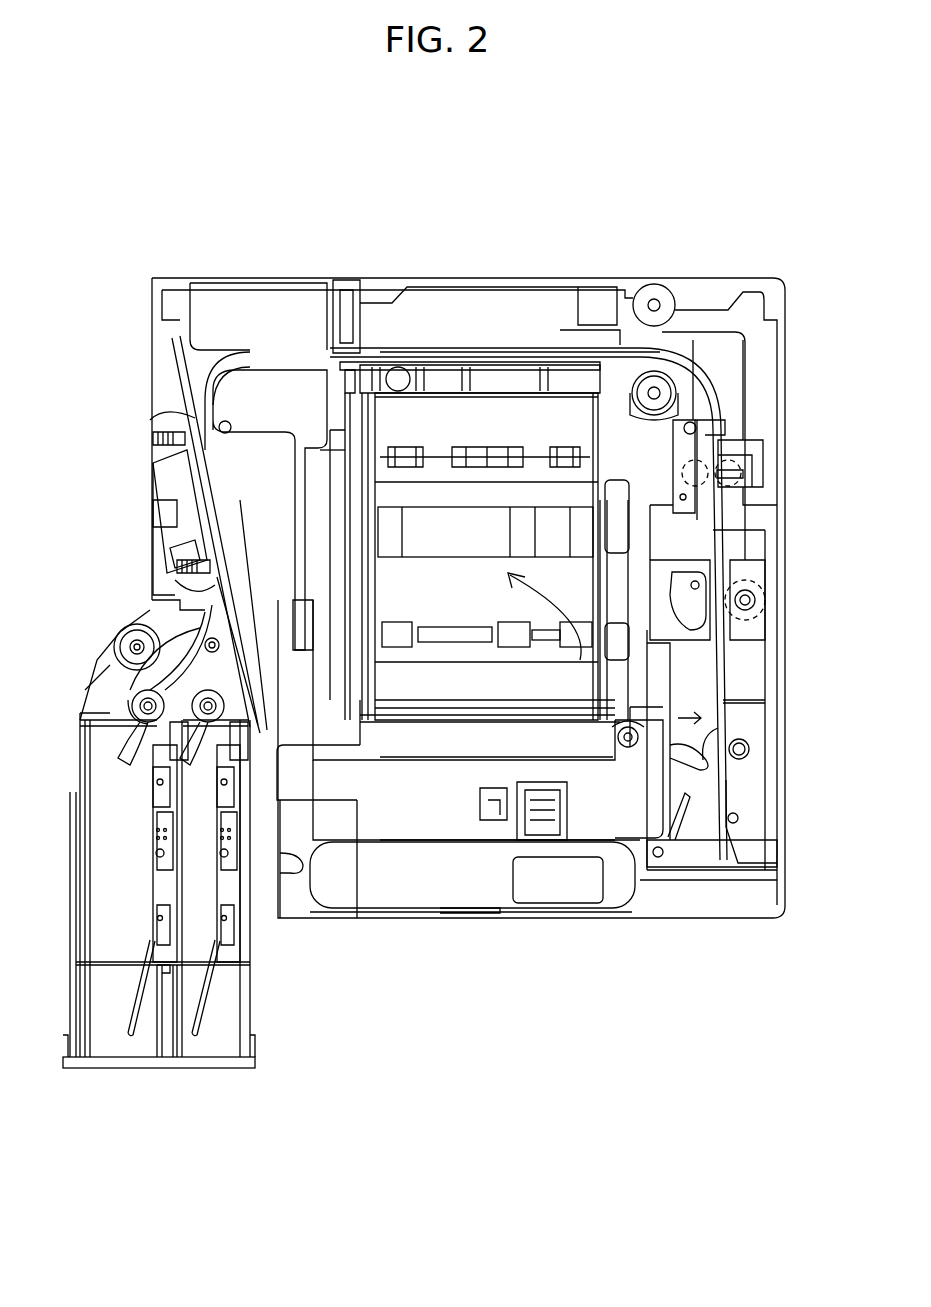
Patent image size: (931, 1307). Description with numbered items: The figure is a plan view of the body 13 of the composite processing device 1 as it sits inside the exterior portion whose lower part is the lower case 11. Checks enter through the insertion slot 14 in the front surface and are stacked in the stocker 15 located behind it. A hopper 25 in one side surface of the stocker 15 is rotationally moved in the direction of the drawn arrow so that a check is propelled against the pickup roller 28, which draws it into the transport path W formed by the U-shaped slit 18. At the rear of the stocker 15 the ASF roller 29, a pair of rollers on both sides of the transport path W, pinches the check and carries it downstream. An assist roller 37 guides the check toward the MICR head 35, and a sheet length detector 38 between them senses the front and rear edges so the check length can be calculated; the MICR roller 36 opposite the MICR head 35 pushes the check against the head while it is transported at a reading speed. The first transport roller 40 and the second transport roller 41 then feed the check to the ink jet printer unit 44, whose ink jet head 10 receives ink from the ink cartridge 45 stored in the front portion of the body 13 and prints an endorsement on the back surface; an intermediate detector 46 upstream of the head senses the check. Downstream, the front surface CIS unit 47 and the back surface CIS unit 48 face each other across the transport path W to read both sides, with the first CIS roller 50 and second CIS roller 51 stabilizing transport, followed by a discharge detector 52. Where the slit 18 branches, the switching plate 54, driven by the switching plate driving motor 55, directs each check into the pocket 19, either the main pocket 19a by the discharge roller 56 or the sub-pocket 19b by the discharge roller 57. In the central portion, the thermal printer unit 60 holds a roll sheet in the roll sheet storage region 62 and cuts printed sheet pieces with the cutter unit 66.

The composite processing device 1 is at (462, 185).
The ink jet head 10 is at (300, 362).
The lower case 11 is at (735, 895).
The body 13 is at (680, 278).
The insertion slot 14 is at (697, 840).
The stocker 15 is at (712, 784).
The slit 18 is at (530, 350).
The pocket 19 is at (205, 1147).
The main pocket 19a is at (112, 935).
The sub-pocket 19b is at (190, 935).
The hopper 25 is at (660, 692).
The pickup roller 28 is at (702, 750).
The ASF roller 29 is at (742, 607).
The MICR head 35 is at (718, 423).
The MICR roller 36 is at (690, 382).
The assist roller 37 is at (724, 498).
The sheet length detector 38 is at (700, 438).
The first transport roller 40 is at (662, 350).
The second transport roller 41 is at (396, 348).
The ink jet printer unit 44 is at (278, 355).
The ink cartridge 45 is at (470, 915).
The intermediate detector 46 is at (345, 360).
The front surface CIS unit 47 is at (180, 491).
The back surface CIS unit 48 is at (228, 496).
The first CIS roller 50 is at (177, 423).
The second CIS roller 51 is at (172, 552).
The discharge detector 52 is at (172, 582).
The switching plate 54 is at (197, 622).
The switching plate driving motor 55 is at (112, 642).
The discharge roller 56 is at (118, 718).
The discharge roller 57 is at (150, 697).
The thermal printer unit 60 is at (463, 680).
The roll sheet storage region 62 is at (580, 720).
The cutter unit 66 is at (385, 808).
The transport path W is at (478, 348).